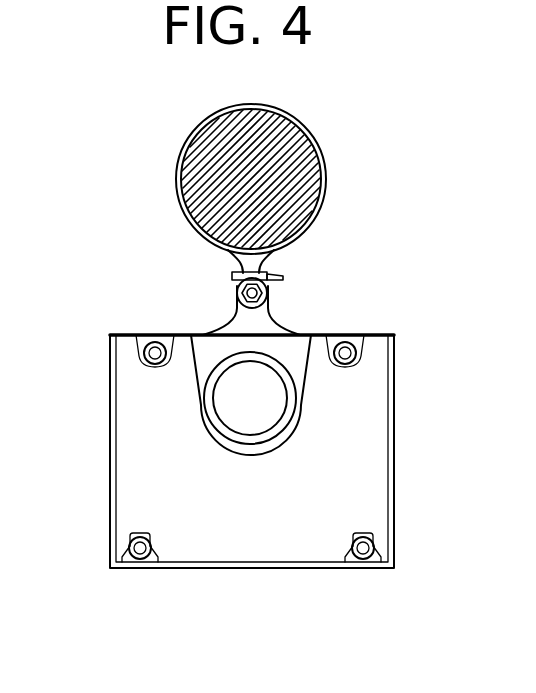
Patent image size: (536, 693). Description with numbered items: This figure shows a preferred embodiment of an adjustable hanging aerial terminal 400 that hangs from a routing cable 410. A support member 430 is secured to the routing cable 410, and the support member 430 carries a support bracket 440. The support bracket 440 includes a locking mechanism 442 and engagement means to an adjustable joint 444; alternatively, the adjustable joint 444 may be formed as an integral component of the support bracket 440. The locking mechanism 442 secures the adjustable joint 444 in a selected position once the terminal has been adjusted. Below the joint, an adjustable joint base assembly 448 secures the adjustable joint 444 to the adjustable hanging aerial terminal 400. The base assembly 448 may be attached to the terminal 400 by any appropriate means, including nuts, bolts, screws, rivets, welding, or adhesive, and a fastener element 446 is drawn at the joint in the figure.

The adjustable hanging aerial terminal 400 is at (111, 598).
The routing cable 410 is at (205, 167).
The support member 430 is at (285, 117).
The support bracket 440 is at (258, 271).
The locking mechanism 442 is at (283, 278).
The adjustable joint 444 is at (233, 275).
The nut 446 is at (268, 292).
The adjustable joint base assembly 448 is at (220, 323).